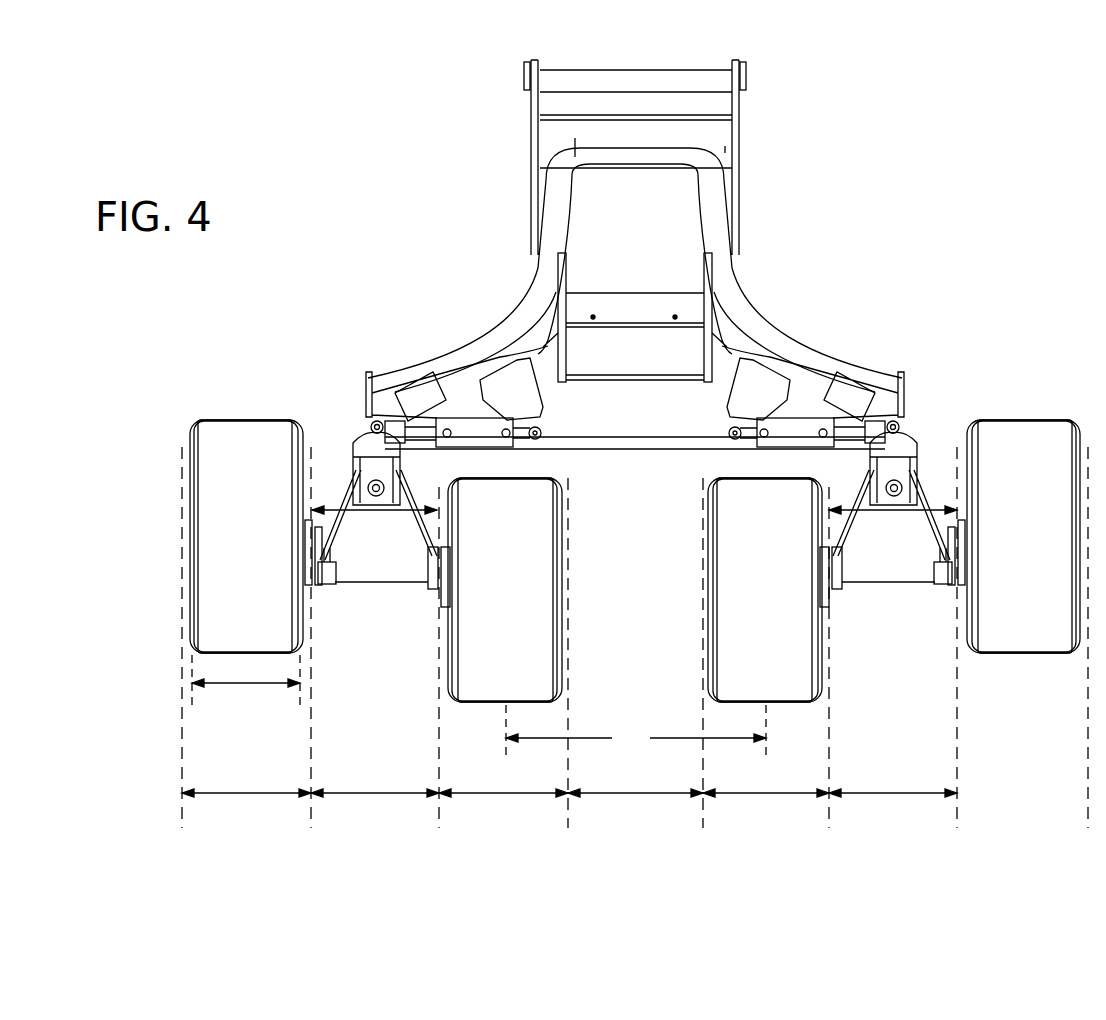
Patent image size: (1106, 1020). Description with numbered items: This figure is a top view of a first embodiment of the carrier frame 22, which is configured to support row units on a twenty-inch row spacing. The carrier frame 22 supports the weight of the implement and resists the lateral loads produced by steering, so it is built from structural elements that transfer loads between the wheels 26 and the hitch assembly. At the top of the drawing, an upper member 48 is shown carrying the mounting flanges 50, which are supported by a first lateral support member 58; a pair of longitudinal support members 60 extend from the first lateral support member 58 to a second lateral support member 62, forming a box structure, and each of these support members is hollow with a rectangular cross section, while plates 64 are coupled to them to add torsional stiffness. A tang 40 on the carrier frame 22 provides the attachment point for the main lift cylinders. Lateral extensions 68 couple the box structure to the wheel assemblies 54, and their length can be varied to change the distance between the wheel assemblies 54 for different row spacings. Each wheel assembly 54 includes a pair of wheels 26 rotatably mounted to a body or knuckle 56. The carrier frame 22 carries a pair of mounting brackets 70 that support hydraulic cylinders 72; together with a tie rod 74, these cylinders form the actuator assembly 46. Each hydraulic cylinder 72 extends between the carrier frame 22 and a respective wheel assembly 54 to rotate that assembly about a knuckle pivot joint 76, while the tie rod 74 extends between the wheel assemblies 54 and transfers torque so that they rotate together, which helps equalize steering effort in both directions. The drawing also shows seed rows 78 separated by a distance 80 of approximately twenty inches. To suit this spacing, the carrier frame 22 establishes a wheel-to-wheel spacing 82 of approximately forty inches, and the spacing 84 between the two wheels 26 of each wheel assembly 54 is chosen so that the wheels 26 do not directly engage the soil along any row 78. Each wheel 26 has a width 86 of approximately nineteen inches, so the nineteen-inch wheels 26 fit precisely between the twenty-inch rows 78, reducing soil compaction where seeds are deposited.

The carrier frame 22 is at (860, 228).
The wheels 26 is at (235, 447).
The tang 40 is at (700, 328).
The actuator assembly 46 is at (425, 320).
The upper cross member 48 is at (598, 73).
The mounting flanges 50 is at (531, 105).
The wheel assemblies 54 is at (340, 625).
The knuckle 56 is at (395, 572).
The first lateral support member 58 is at (718, 132).
The longitudinal support members 60 is at (537, 185).
The second lateral support member 62 is at (633, 362).
The plates 64 is at (513, 323).
The lateral extensions 68 is at (400, 372).
The mounting brackets 70 is at (533, 404).
The hydraulic cylinders 72 is at (460, 432).
The tie rod 74 is at (635, 443).
The knuckle pivot joint 76 is at (372, 483).
The seed rows 78 is at (180, 755).
The distance 80 is at (236, 795).
The wheel-to-wheel spacing 82 is at (636, 732).
The spacing 84 is at (374, 512).
The width 86 is at (242, 690).